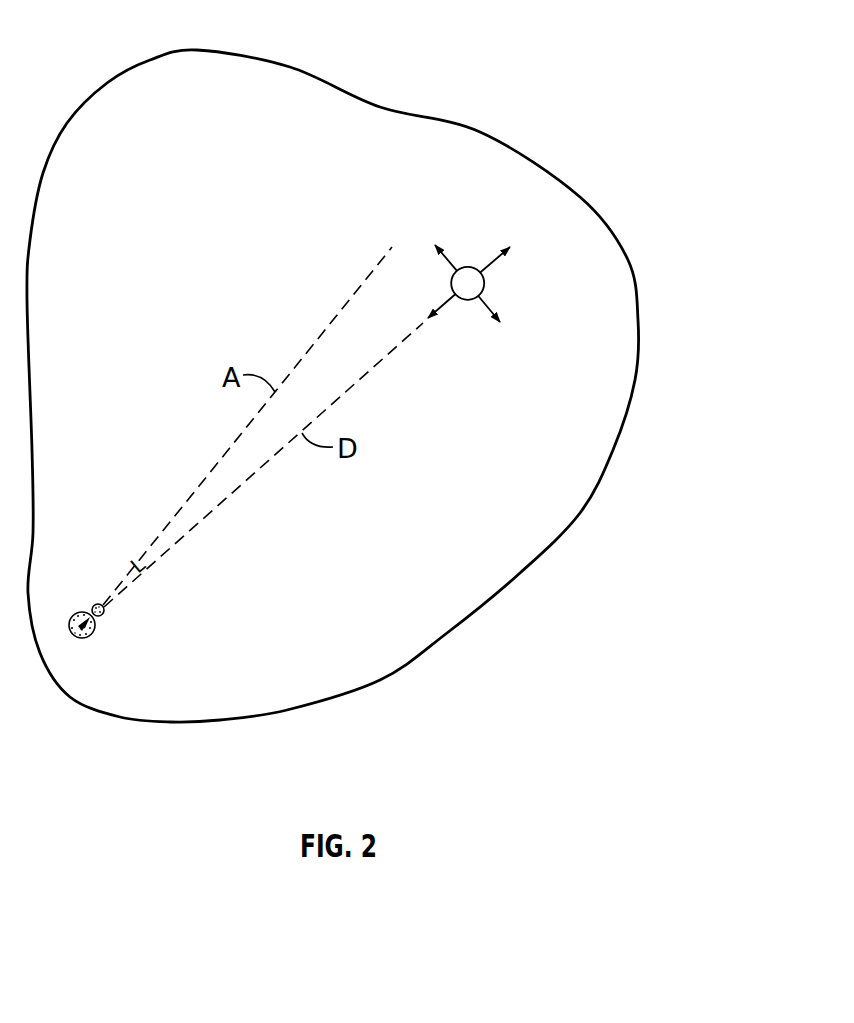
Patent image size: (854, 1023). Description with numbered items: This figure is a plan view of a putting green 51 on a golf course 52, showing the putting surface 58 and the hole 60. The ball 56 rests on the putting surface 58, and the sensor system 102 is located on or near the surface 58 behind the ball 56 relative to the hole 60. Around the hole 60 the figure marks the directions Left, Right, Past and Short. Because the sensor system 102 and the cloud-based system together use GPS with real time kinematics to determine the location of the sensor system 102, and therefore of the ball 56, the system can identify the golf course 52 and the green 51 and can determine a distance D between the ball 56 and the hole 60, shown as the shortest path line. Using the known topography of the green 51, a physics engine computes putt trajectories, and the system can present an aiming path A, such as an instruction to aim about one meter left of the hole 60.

The putting green 51 is at (612, 311).
The golf course 52 is at (644, 150).
The ball 56 is at (105, 607).
The putting surface 58 is at (366, 626).
The hole 60 is at (470, 300).
The sensor system 102 is at (87, 640).